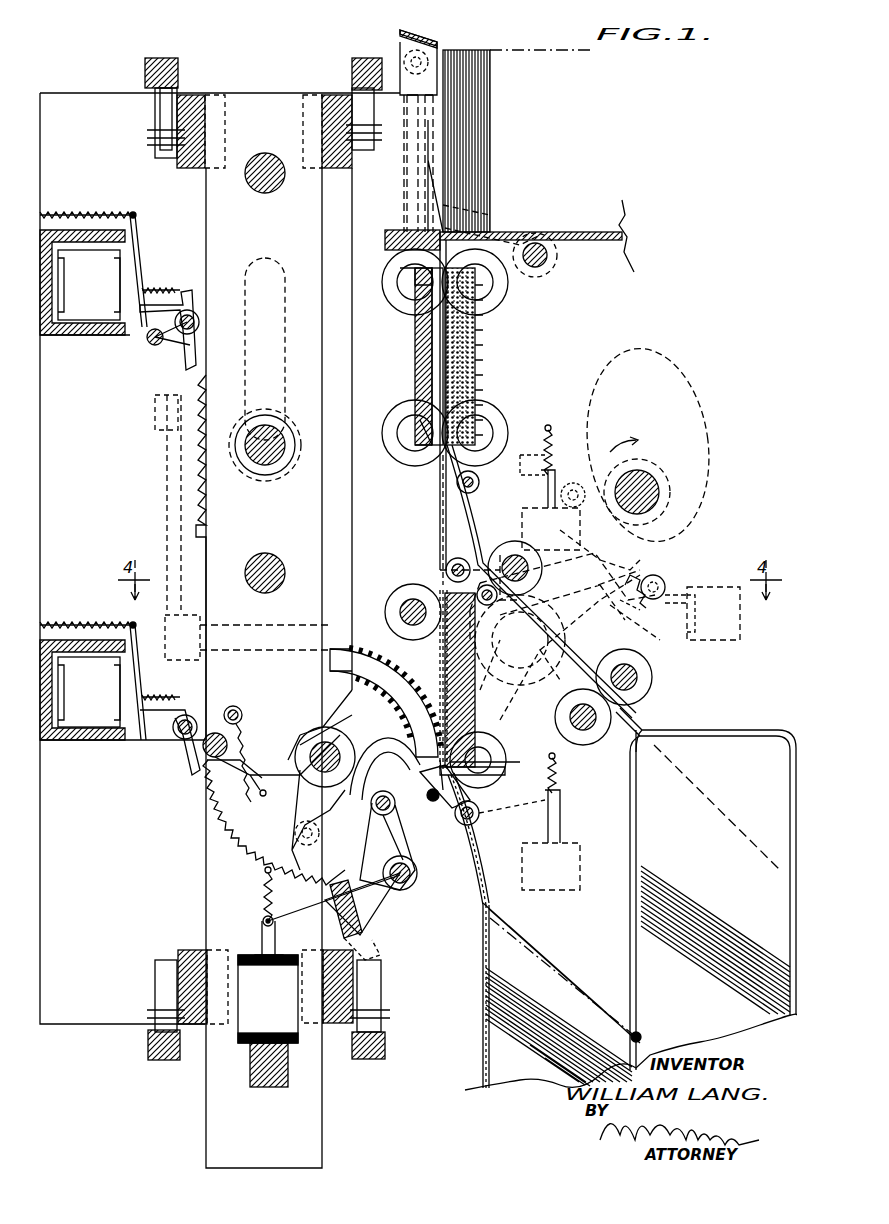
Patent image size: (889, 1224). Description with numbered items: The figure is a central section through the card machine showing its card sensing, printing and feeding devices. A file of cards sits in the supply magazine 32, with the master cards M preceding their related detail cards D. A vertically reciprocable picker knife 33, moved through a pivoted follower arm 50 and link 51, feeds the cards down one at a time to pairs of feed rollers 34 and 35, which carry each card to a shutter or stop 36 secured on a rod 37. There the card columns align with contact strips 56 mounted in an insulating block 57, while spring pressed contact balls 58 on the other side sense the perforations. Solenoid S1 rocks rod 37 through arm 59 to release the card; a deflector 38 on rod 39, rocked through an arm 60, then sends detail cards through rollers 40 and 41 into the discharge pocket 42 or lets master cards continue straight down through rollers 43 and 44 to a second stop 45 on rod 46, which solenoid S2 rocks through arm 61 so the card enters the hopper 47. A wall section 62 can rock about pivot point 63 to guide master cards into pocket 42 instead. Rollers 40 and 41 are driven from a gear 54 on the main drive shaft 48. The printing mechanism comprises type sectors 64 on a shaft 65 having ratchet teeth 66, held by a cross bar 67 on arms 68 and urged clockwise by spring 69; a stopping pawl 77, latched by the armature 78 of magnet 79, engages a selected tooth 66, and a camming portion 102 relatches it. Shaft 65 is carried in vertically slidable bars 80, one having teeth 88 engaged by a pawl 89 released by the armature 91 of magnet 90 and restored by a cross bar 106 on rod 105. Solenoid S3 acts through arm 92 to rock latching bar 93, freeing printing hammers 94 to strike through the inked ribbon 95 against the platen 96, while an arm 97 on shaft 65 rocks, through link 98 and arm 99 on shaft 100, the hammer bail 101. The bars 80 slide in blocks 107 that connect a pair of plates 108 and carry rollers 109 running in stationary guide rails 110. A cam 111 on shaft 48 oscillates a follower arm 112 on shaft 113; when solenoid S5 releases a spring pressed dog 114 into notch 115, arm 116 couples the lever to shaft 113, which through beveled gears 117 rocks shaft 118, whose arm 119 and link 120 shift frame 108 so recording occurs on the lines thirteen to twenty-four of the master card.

The plates 108 is at (55, 478).
The vertically slidable bars 80 is at (322, 513).
The blocks 107 is at (192, 96).
The stationary guide rails 110 is at (150, 58).
The rollers 109 is at (158, 122).
The magnet 90 is at (78, 320).
The armature 91 is at (143, 260).
The pawl 89 is at (188, 340).
The rod 105 is at (197, 322).
The cross bar 106 is at (150, 340).
The teeth 88 is at (198, 405).
The link 120 is at (155, 408).
The arm 119 is at (167, 494).
The shaft 118 is at (270, 625).
The magnet 79 is at (88, 740).
The armature 78 is at (150, 705).
The stopping pawl 77 is at (188, 750).
The cross bar 67 is at (200, 722).
The spring 69 is at (245, 730).
The arms 68 is at (277, 740).
The camming portion 102 is at (205, 765).
The type sectors 64 is at (330, 660).
The shaft 65 is at (320, 742).
The ratchet teeth 66 is at (262, 830).
The arm 97 is at (300, 800).
The hammer bail 101 is at (388, 793).
The printing hammers 94 is at (408, 845).
The shaft 100 is at (412, 882).
The arm 99 is at (395, 918).
The link 98 is at (385, 960).
The arm 92 is at (280, 910).
The latching bar 93 is at (345, 905).
The solenoid S3 is at (245, 1030).
The picker knife 33 is at (437, 35).
The link 51 is at (410, 195).
The pivoted follower arm 50 is at (505, 220).
The supply magazine 32 is at (590, 232).
The feed rollers 34 is at (405, 270).
The feed rollers 35 is at (487, 410).
The contact strips 56 is at (415, 327).
The detail cards D is at (437, 350).
The insulating block 57 is at (415, 398).
The spring pressed contact balls 58 is at (495, 327).
The deflector 38 is at (440, 505).
The rod 37 is at (448, 490).
The shutter or stop 36 is at (456, 478).
The rod 39 is at (447, 565).
The rollers 40 is at (516, 555).
The rollers 43 is at (408, 598).
The master cards M is at (445, 663).
The inked ribbon 95 is at (486, 752).
The platen 96 is at (492, 762).
The rollers 44 is at (440, 790).
The second stop 45 is at (452, 812).
The rod 46 is at (470, 825).
The arm 61 is at (545, 815).
The solenoid S2 is at (580, 850).
The arm 59 is at (535, 460).
The solenoid S1 is at (522, 515).
The arm 60 is at (540, 580).
The gear 54 is at (538, 665).
The shaft 113 is at (530, 685).
The beveled gears 117 is at (500, 690).
The arm 116 is at (610, 608).
The follower arm 112 is at (640, 610).
The notch 115 is at (640, 560).
The spring pressed dog 114 is at (660, 580).
The solenoid S5 is at (705, 640).
The cam 111 is at (705, 390).
The main drive shaft 48 is at (643, 485).
The rollers 41 is at (632, 703).
The discharge pocket 42 is at (706, 889).
The hopper 47 is at (630, 996).
The wall section 62 is at (600, 985).
The pivot point 63 is at (640, 1034).